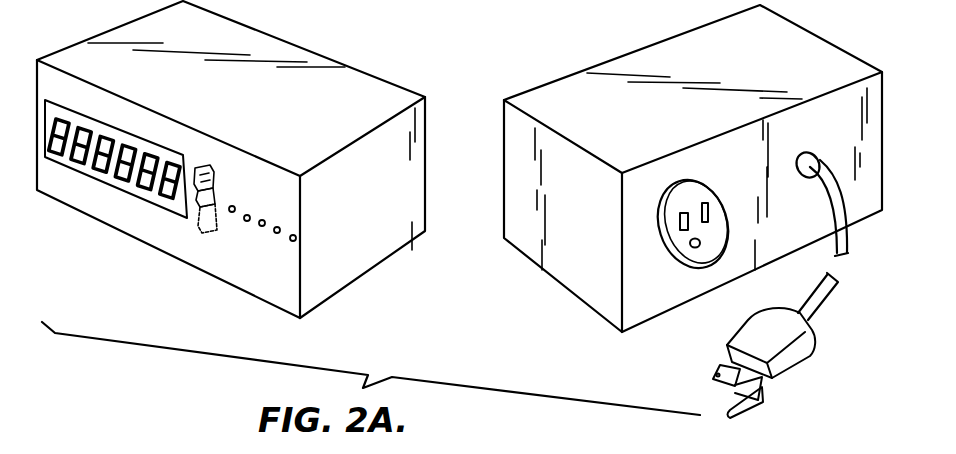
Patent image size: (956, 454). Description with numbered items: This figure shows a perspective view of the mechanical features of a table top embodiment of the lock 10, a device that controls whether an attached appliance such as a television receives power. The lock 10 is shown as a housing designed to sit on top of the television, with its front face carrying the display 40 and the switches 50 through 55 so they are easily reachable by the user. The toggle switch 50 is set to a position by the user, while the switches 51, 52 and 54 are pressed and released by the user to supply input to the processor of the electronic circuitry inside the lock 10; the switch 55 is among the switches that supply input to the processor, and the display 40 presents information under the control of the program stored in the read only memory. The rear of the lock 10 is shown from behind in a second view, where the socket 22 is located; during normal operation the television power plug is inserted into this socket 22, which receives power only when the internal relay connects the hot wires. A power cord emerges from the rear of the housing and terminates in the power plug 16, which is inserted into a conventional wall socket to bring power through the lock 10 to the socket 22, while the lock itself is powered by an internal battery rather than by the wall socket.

The lock 10 is at (381, 87).
The display 40 is at (82, 178).
The toggle switch 50 is at (192, 200).
The switch 51 is at (230, 213).
The switch 52 is at (247, 222).
The switch 54 is at (277, 234).
The switch 55 is at (262, 227).
The socket 22 is at (707, 183).
The power plug 16 is at (788, 362).